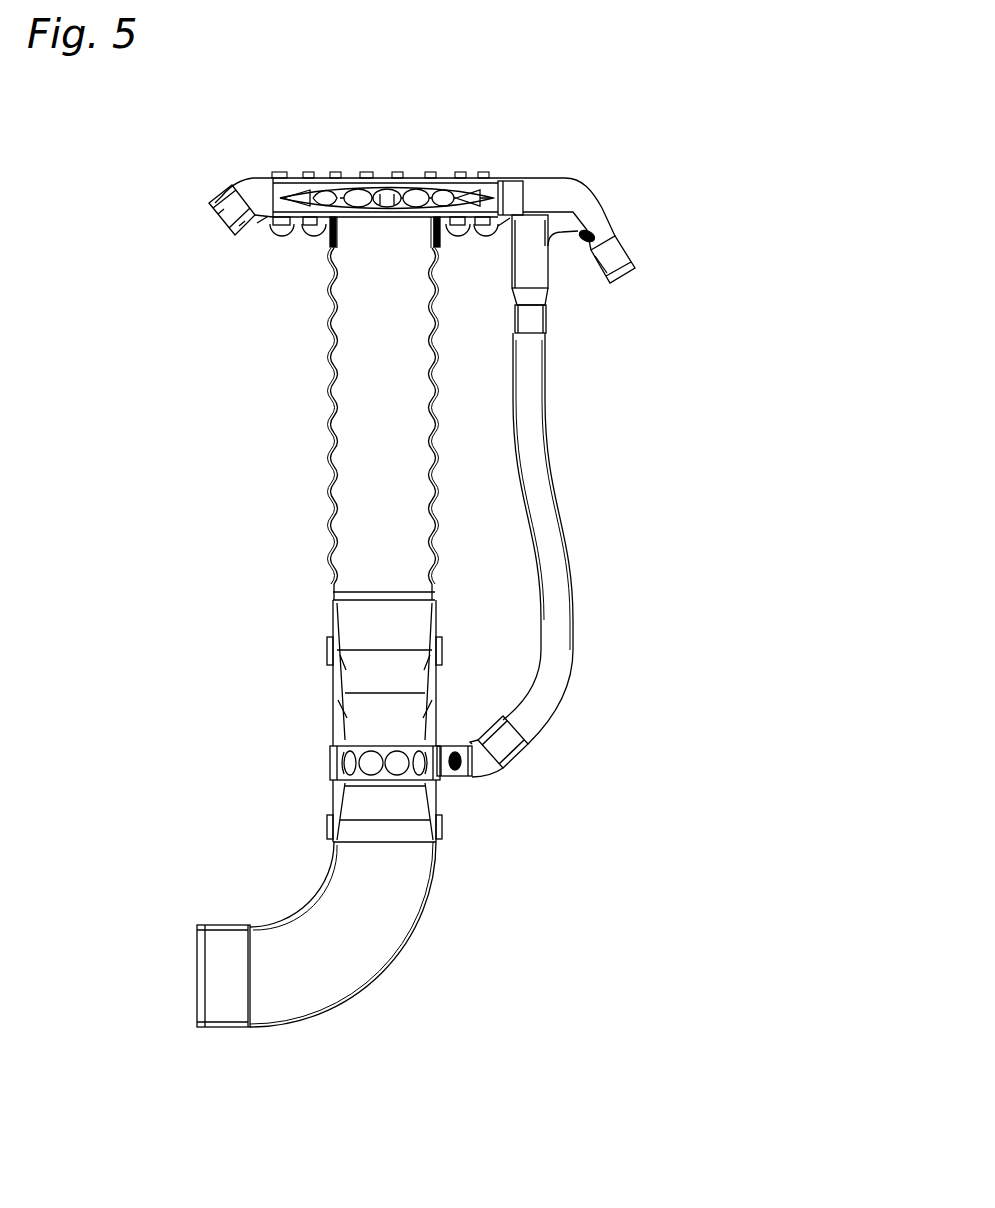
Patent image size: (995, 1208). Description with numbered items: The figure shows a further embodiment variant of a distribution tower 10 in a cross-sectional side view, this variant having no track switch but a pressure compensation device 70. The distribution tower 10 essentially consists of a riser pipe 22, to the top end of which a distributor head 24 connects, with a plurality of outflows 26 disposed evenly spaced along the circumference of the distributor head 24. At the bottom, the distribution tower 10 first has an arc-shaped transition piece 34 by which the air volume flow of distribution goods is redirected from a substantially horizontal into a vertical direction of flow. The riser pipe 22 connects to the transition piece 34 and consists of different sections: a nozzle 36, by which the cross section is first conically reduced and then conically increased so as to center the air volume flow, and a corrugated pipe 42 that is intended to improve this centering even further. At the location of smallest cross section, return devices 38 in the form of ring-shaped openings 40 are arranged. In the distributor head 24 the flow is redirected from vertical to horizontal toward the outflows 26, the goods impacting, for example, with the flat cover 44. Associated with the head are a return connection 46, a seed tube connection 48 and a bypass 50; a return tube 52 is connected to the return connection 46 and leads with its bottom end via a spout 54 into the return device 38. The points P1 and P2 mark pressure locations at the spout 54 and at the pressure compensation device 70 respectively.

The distribution tower 10 is at (480, 112).
The riser pipe 22 is at (283, 526).
The distributor head 24 is at (385, 171).
The outflows 26 is at (229, 179).
The transition piece 34 is at (313, 964).
The nozzle 36 is at (368, 726).
The return devices 38 is at (329, 763).
The ring-shaped openings 40 is at (385, 763).
The corrugated pipe 42 is at (368, 330).
The cover 44 is at (388, 209).
The return connection 46 is at (555, 323).
The seed tube connection 48 is at (643, 262).
The bypass 50 is at (521, 266).
The return tube 52 is at (574, 683).
The spout 54 is at (507, 769).
The pressure compensation device 70 is at (613, 188).
The first pressure measuring point P1 is at (458, 771).
The second pressure measuring point P2 is at (598, 237).